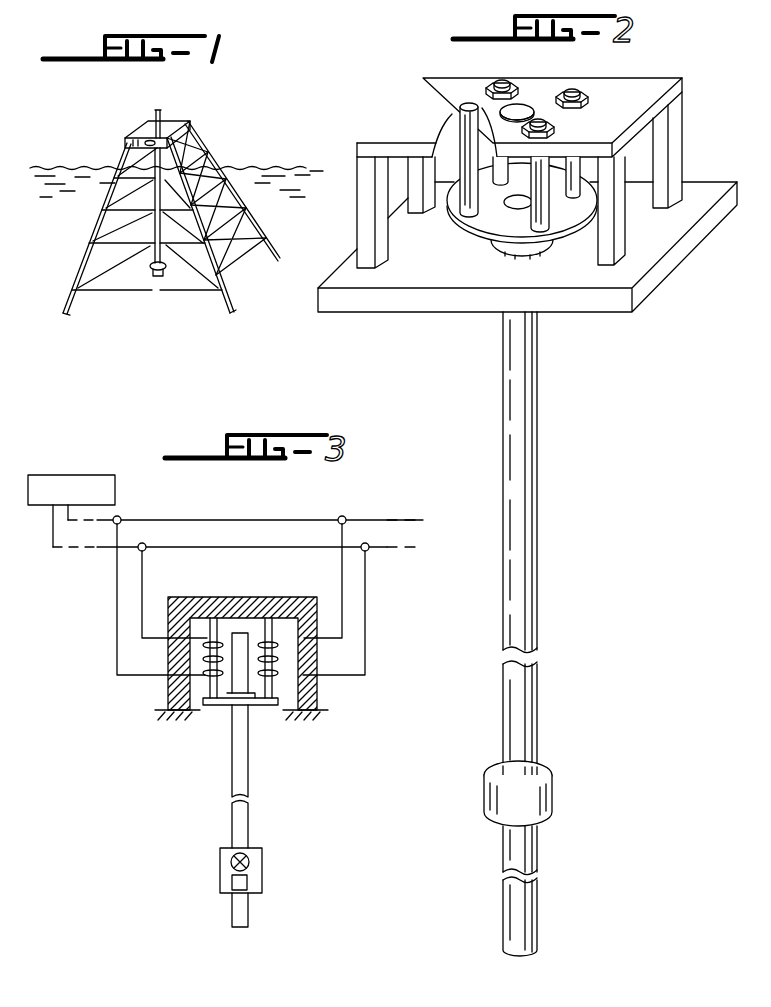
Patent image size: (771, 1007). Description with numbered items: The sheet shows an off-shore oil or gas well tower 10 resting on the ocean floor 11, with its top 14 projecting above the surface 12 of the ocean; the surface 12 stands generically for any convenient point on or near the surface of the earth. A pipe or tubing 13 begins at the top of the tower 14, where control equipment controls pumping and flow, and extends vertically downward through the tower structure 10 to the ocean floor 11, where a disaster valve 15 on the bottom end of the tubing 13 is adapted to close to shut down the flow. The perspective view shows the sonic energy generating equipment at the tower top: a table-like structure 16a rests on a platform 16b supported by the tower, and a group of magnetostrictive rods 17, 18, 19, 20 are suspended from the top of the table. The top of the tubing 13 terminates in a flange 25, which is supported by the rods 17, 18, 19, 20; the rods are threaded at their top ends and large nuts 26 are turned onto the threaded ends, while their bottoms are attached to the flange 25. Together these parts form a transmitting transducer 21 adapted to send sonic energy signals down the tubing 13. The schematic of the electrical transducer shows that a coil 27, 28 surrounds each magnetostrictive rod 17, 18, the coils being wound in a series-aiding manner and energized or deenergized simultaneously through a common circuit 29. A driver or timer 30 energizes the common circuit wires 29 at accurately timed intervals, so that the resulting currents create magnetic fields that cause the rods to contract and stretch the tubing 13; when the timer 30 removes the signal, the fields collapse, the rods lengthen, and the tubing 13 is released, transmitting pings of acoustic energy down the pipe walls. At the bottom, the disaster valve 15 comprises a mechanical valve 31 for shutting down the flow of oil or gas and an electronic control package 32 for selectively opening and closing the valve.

In FIG. 1, the well tower 10 is at (265, 228).
In FIG. 1, the ocean floor 11 is at (184, 322).
In FIG. 1, the ocean surface 12 is at (277, 167).
In FIG. 1, the tubing 13 is at (161, 232).
In FIG. 2, the tubing 13 is at (537, 570).
In FIG. 3, the tubing 13 is at (248, 810).
In FIG. 1, the tower top 14 is at (163, 124).
In FIG. 2, the tower top 14 is at (527, 172).
In FIG. 1, the disaster valve 15 is at (152, 276).
In FIG. 2, the disaster valve 15 is at (553, 788).
In FIG. 3, the disaster valve 15 is at (242, 865).
In FIG. 2, the table-like structure 16a is at (519, 163).
In FIG. 2, the platform 16b is at (656, 286).
In FIG. 2, the magnetostrictive rod 17 is at (464, 180).
In FIG. 3, the magnetostrictive rod 17 is at (216, 633).
In FIG. 2, the magnetostrictive rod 18 is at (546, 216).
In FIG. 3, the magnetostrictive rod 18 is at (272, 633).
In FIG. 2, the magnetostrictive rod 19 is at (506, 194).
In FIG. 2, the magnetostrictive rod 20 is at (559, 191).
In FIG. 2, the transmitting transducer 21 is at (512, 221).
In FIG. 2, the flange 25 is at (487, 245).
In FIG. 2, the nuts 26 is at (538, 118).
In FIG. 3, the coil 27 is at (221, 700).
In FIG. 3, the coil 28 is at (284, 650).
In FIG. 3, the common circuit wires 29 is at (245, 547).
In FIG. 3, the timer 30 is at (115, 488).
In FIG. 3, the mechanical valve 31 is at (231, 862).
In FIG. 3, the electronic control package 32 is at (247, 883).